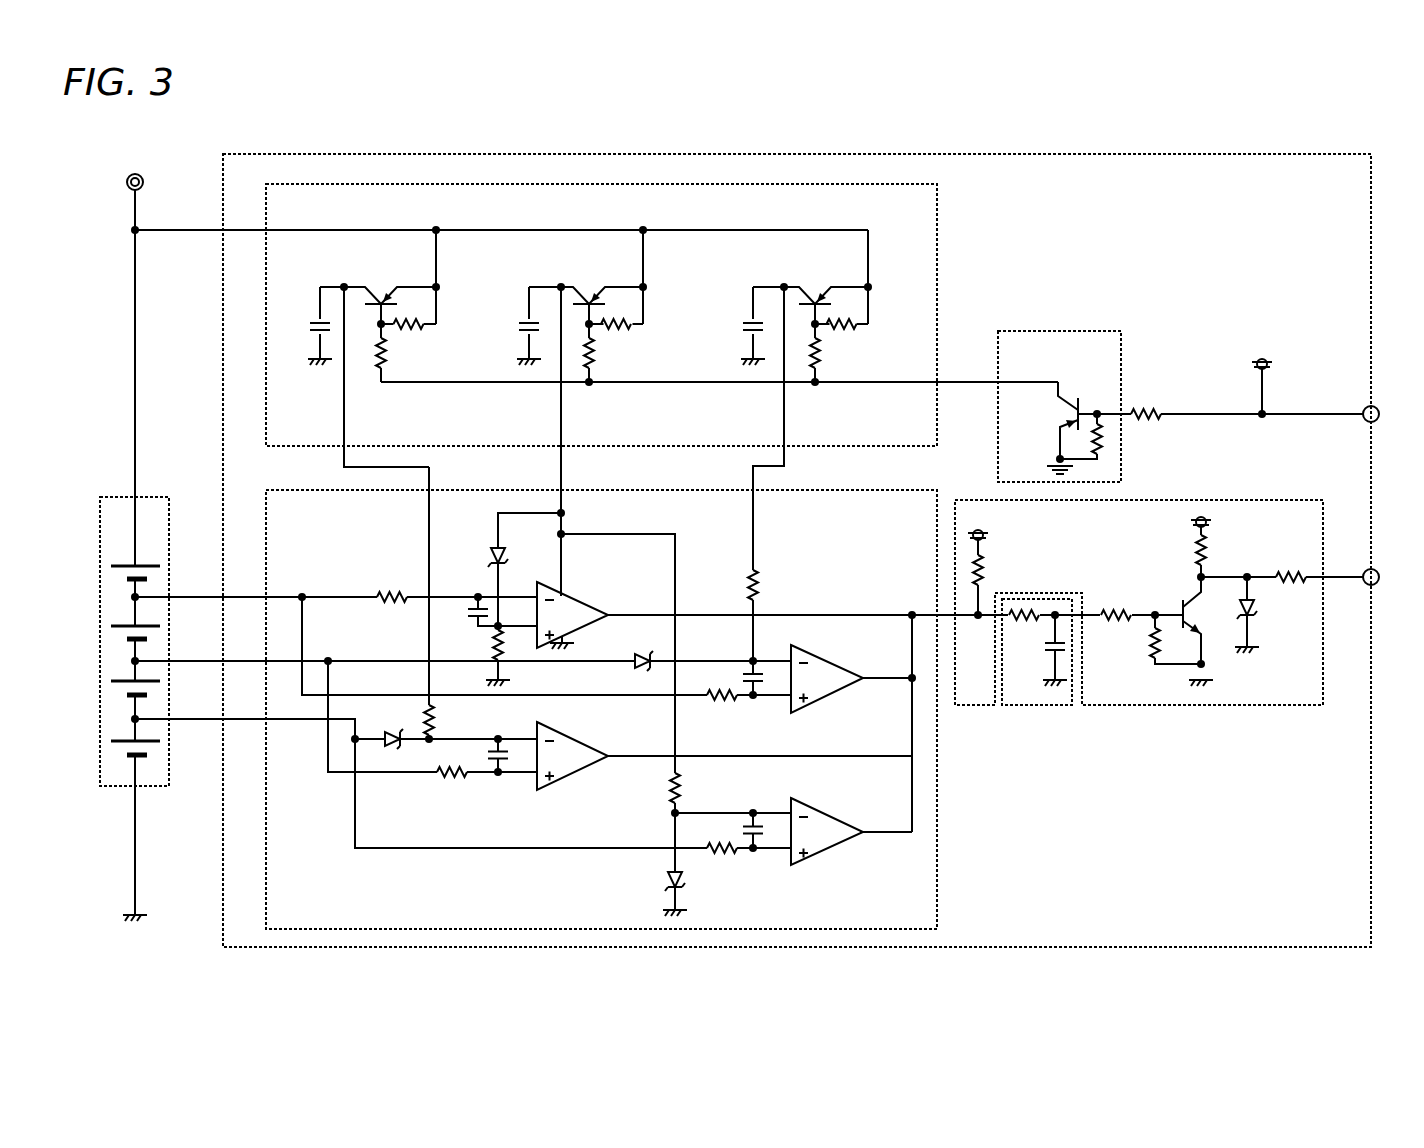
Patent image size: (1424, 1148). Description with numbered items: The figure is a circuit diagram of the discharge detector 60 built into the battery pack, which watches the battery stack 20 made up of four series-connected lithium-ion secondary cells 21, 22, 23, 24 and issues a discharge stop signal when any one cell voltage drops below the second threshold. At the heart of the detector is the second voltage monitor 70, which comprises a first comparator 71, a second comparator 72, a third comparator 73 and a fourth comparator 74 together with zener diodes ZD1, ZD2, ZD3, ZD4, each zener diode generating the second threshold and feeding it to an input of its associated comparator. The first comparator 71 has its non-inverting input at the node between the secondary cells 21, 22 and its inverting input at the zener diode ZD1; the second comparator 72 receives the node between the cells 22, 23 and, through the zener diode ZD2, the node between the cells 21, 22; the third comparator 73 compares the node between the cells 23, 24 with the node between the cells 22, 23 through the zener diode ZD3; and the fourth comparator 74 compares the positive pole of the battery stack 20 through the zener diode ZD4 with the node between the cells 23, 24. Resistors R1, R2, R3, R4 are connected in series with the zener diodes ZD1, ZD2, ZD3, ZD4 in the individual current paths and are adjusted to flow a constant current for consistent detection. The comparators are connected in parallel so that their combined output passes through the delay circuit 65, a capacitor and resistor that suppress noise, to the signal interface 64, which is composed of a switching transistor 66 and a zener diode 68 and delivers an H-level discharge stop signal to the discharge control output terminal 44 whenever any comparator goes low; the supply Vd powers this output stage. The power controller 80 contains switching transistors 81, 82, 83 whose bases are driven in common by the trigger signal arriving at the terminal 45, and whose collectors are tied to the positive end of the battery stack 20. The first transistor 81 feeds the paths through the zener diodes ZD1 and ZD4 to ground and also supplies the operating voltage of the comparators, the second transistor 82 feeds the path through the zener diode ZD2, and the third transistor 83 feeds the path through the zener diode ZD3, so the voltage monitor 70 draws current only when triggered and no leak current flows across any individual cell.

The battery stack 20 is at (134, 641).
The secondary cell 21 is at (105, 761).
The secondary cell 22 is at (105, 699).
The secondary cell 23 is at (105, 641).
The secondary cell 24 is at (105, 579).
The discharge control output terminal 44 is at (1385, 593).
The terminal 45 is at (1385, 429).
The discharge detector 60 is at (797, 550).
The signal interface 64 is at (1139, 602).
The delay circuit 65 is at (1037, 652).
The switching transistor 66 is at (1181, 626).
The zener diode 68 is at (1267, 615).
The second voltage monitor 70 is at (601, 709).
The first comparator 71 is at (827, 831).
The second comparator 72 is at (572, 756).
The third comparator 73 is at (827, 679).
The fourth comparator 74 is at (572, 615).
The power controller 80 is at (601, 315).
The first transistor 81 is at (582, 306).
The second transistor 82 is at (714, 354).
The third transistor 83 is at (806, 308).
The resistor R1 is at (654, 788).
The resistor R2 is at (447, 603).
The resistor R3 is at (773, 474).
The resistor R4 is at (484, 656).
The zener diode ZD1 is at (650, 894).
The zener diode ZD2 is at (381, 725).
The zener diode ZD3 is at (646, 650).
The zener diode ZD4 is at (498, 569).
The power supply voltage Vd is at (1140, 438).